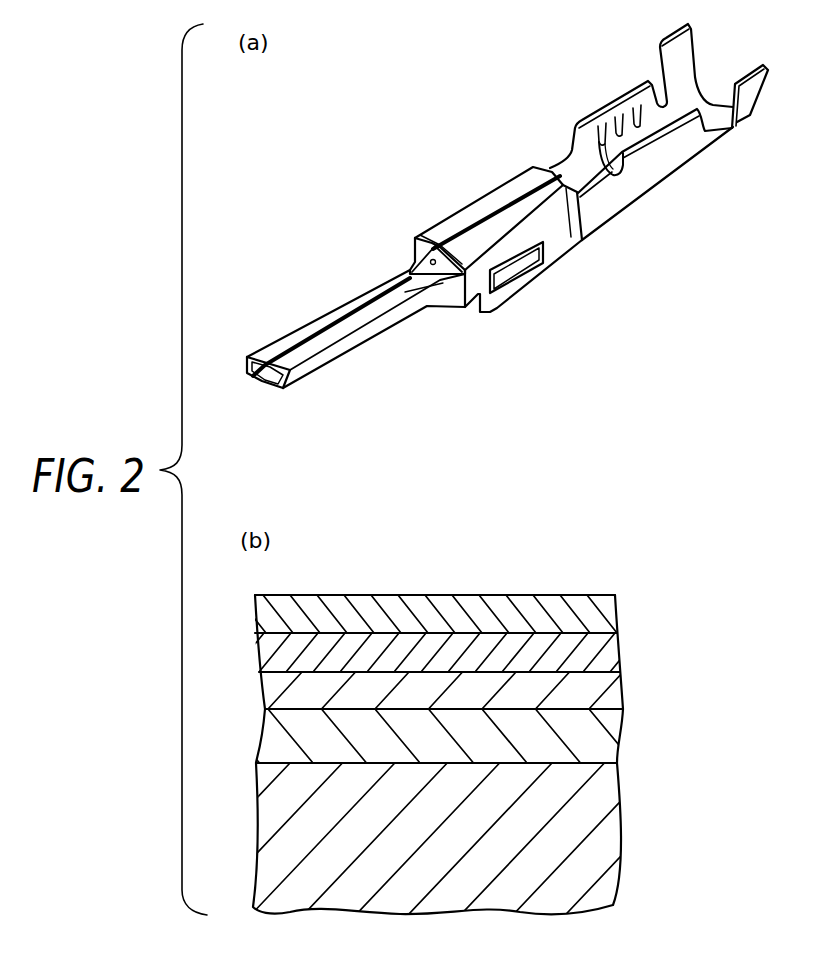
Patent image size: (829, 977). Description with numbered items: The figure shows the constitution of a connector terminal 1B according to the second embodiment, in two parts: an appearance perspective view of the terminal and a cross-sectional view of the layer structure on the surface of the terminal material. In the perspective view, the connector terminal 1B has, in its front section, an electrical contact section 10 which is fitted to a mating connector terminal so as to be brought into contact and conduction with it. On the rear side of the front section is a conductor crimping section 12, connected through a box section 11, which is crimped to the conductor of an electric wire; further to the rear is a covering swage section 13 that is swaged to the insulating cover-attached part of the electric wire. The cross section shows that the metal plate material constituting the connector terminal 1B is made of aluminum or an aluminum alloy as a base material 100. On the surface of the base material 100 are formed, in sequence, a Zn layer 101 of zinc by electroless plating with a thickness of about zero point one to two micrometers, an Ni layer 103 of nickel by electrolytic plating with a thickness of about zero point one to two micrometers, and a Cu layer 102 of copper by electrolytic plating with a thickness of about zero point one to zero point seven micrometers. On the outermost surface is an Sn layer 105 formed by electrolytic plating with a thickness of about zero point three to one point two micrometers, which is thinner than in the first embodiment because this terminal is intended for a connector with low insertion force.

The connector terminal 1B is at (419, 188).
The electrical contact section 10 is at (327, 312).
The box section 11 is at (562, 237).
The conductor crimping section 12 is at (650, 167).
The covering swage section 13 is at (745, 120).
The Sn layer 105 is at (608, 608).
The Cu layer 102 is at (608, 650).
The Ni layer 103 is at (610, 695).
The Zn layer 101 is at (610, 733).
The base material 100 is at (607, 815).